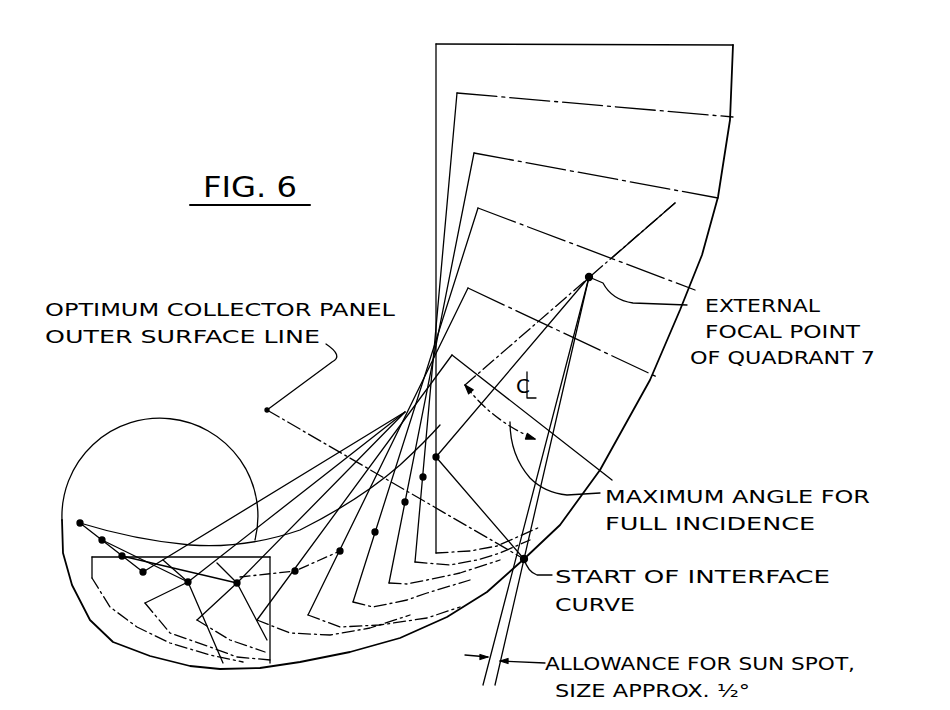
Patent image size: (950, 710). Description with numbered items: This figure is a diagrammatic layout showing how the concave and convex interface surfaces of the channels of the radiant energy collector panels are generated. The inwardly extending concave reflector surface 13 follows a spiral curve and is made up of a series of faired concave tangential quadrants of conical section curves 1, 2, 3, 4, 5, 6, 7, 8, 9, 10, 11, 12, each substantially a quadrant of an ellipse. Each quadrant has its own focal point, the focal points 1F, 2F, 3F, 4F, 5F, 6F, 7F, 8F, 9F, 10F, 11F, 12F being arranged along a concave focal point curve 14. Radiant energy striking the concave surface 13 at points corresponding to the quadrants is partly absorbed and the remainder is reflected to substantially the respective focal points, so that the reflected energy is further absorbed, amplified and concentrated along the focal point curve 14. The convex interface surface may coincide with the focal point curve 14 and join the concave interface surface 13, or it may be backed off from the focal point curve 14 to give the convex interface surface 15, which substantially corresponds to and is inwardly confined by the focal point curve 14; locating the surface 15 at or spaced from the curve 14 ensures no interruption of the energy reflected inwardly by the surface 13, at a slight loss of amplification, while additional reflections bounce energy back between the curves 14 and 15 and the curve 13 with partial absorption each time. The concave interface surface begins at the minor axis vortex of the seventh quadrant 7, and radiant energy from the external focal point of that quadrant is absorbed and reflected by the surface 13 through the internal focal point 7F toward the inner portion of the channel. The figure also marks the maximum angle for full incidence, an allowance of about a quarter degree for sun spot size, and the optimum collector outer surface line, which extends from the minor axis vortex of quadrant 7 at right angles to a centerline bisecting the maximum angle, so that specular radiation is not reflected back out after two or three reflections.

The concave tangential quadrant of conical section curve 1 is at (440, 38).
The concave tangential quadrant of conical section curve 2 is at (462, 86).
The concave tangential quadrant of conical section curve 3 is at (480, 147).
The concave tangential quadrant of conical section curve 4 is at (484, 202).
The concave tangential quadrant of conical section curve 5 is at (474, 282).
The concave tangential quadrant of conical section curve 6 is at (458, 349).
The concave tangential quadrant of conical section curve 7 is at (405, 422).
The concave tangential quadrant of conical section curve 8 is at (362, 467).
The concave tangential quadrant of conical section curve 9 is at (323, 523).
The concave tangential quadrant of conical section curve 10 is at (293, 525).
The concave tangential quadrant of conical section curve 11 is at (217, 563).
The concave tangential quadrant of conical section curve 12 is at (163, 560).
The concave reflector surface 13 is at (226, 432).
The focal point curve 14 is at (402, 457).
The convex interface surface 15 is at (338, 510).
The focal point 1F is at (437, 457).
The focal point 2F is at (423, 477).
The focal point 3F is at (405, 502).
The focal point 4F is at (375, 532).
The focal point 5F is at (340, 551).
The focal point 6F is at (295, 571).
The internal focal point 7F is at (237, 583).
The focal point 8F is at (188, 582).
The focal point 9F is at (143, 572).
The focal point 10F is at (122, 556).
The focal point 11F is at (102, 540).
The focal point 12F is at (80, 523).